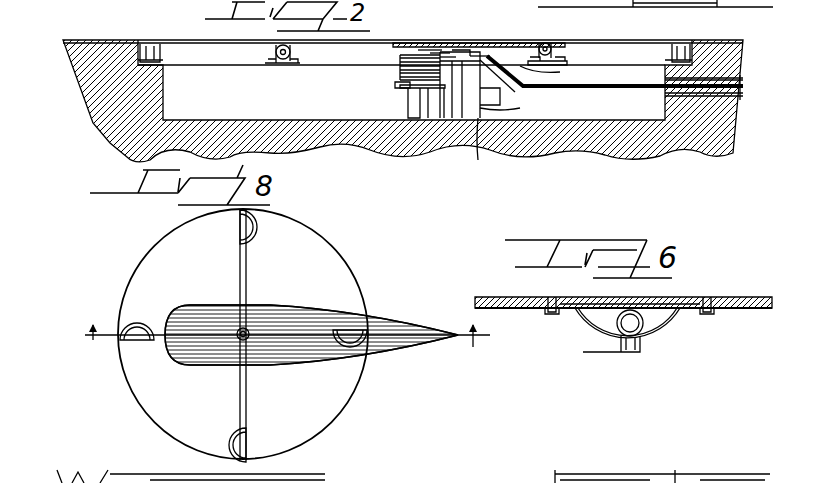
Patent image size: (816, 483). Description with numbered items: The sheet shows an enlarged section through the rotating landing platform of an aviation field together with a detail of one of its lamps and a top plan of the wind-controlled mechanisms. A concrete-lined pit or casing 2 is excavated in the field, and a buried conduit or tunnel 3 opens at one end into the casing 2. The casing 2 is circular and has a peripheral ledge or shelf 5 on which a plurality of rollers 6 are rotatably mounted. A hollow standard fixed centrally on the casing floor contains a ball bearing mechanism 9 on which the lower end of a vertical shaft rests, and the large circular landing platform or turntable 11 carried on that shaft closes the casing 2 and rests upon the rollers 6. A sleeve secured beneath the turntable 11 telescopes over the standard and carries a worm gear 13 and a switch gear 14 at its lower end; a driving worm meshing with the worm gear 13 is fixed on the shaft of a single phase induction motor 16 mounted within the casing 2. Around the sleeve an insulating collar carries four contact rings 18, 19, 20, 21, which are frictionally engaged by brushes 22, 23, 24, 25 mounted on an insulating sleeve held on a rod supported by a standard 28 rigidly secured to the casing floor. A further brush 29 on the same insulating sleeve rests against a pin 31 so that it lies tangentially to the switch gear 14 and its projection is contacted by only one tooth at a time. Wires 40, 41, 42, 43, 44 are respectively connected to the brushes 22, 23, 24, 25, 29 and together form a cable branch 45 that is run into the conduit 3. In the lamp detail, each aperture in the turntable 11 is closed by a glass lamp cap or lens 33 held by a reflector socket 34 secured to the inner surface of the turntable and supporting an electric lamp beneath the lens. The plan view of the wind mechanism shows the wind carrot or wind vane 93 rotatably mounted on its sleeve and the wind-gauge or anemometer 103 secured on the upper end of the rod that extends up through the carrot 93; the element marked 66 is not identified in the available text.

In FIG. 2, the pit or casing 2 is at (112, 133).
In FIG. 2, the conduit or tunnel 3 is at (737, 97).
In FIG. 2, the peripheral ledge or shelf 5 is at (312, 68).
In FIG. 2, the rollers 6 is at (275, 56).
In FIG. 8, the ball bearing mechanism 9 is at (287, 347).
In FIG. 2, the landing platform or turntable 11 is at (190, 40).
In FIG. 6, the landing platform or turntable 11 is at (495, 297).
In FIG. 2, the worm gear 13 is at (400, 92).
In FIG. 2, the switch gear 14 is at (395, 85).
In FIG. 2, the single phase induction motor 16 is at (500, 100).
In FIG. 2, the contact ring 18 is at (400, 56).
In FIG. 2, the contact ring 19 is at (400, 63).
In FIG. 2, the contact ring 20 is at (400, 72).
In FIG. 2, the contact ring 21 is at (400, 78).
In FIG. 2, the brush 22 is at (430, 52).
In FIG. 2, the brush 23 is at (437, 55).
In FIG. 2, the brush 24 is at (447, 60).
In FIG. 2, the brush 25 is at (460, 52).
In FIG. 2, the standard 28 is at (410, 105).
In FIG. 2, the brush 29 is at (452, 86).
In FIG. 2, the pin 31 is at (480, 149).
In FIG. 6, the glass lamp cap or lens 33 is at (662, 296).
In FIG. 6, the reflector socket 34 is at (660, 320).
In FIG. 2, the wire 40 is at (475, 58).
In FIG. 2, the wire 41 is at (495, 58).
In FIG. 2, the wire 42 is at (532, 60).
In FIG. 2, the wire 43 is at (540, 73).
In FIG. 2, the wire 44 is at (500, 98).
In FIG. 2, the cable branch 45 is at (608, 96).
In FIG. 8, the disc 66 is at (243, 334).
In FIG. 8, the wind carrot or wind vane 93 is at (325, 312).
In FIG. 8, the wind-gauge or anemometer 103 is at (240, 278).